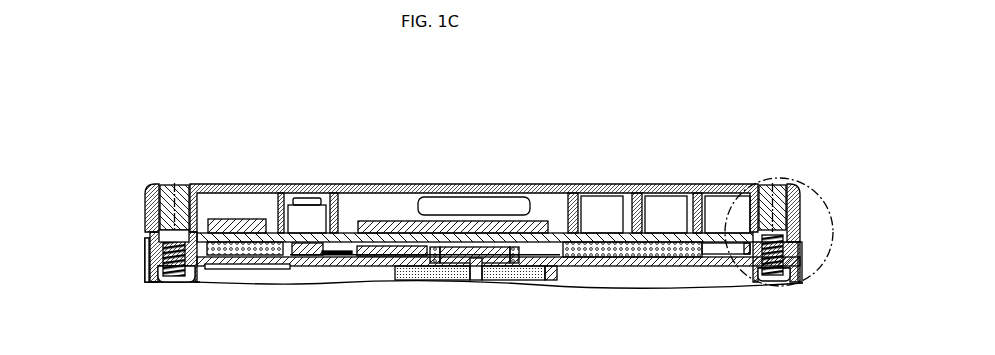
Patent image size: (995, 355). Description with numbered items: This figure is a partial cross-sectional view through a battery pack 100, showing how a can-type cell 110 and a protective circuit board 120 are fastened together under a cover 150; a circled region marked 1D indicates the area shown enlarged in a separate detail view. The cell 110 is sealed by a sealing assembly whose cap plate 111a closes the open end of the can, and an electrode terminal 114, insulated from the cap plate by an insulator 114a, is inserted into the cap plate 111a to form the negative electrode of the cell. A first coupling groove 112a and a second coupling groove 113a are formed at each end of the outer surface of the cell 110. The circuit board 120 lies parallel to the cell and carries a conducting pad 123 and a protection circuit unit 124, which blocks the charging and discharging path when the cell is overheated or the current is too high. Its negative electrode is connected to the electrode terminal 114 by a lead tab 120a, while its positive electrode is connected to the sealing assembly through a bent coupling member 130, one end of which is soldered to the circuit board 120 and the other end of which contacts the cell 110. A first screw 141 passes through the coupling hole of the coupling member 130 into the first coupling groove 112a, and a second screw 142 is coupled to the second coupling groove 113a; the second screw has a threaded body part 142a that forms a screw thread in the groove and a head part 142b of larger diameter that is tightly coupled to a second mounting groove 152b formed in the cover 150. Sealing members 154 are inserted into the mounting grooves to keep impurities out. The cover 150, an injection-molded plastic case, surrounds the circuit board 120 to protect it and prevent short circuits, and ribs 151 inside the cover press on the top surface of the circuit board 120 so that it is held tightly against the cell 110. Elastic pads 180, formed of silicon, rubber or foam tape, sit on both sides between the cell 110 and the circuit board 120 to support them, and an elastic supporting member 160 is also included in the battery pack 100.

The battery pack 100 is at (97, 80).
The cell 110 is at (142, 281).
The cap plate 111a is at (602, 267).
The first coupling groove 112a is at (776, 264).
The second coupling groove 113a is at (176, 272).
The electrode terminal 114 is at (474, 270).
The insulator 114a is at (430, 270).
The circuit board 120 is at (559, 233).
The lead tab 120a is at (336, 259).
The conducting pad 123 is at (307, 212).
The protection circuit unit 124 is at (233, 218).
The coupling member 130 is at (720, 254).
The first screw 141 is at (800, 227).
The second screw 142 is at (153, 229).
The body part 142a is at (193, 266).
The head part 142b is at (156, 240).
The cover 150 is at (654, 184).
The ribs 151 is at (340, 213).
The second mounting groove 152b is at (150, 258).
The sealing members 154 is at (174, 195).
The elastic supporting member 160 is at (802, 246).
The elastic pads 180 is at (266, 256).
The detail region of FIG. 1D is at (826, 201).